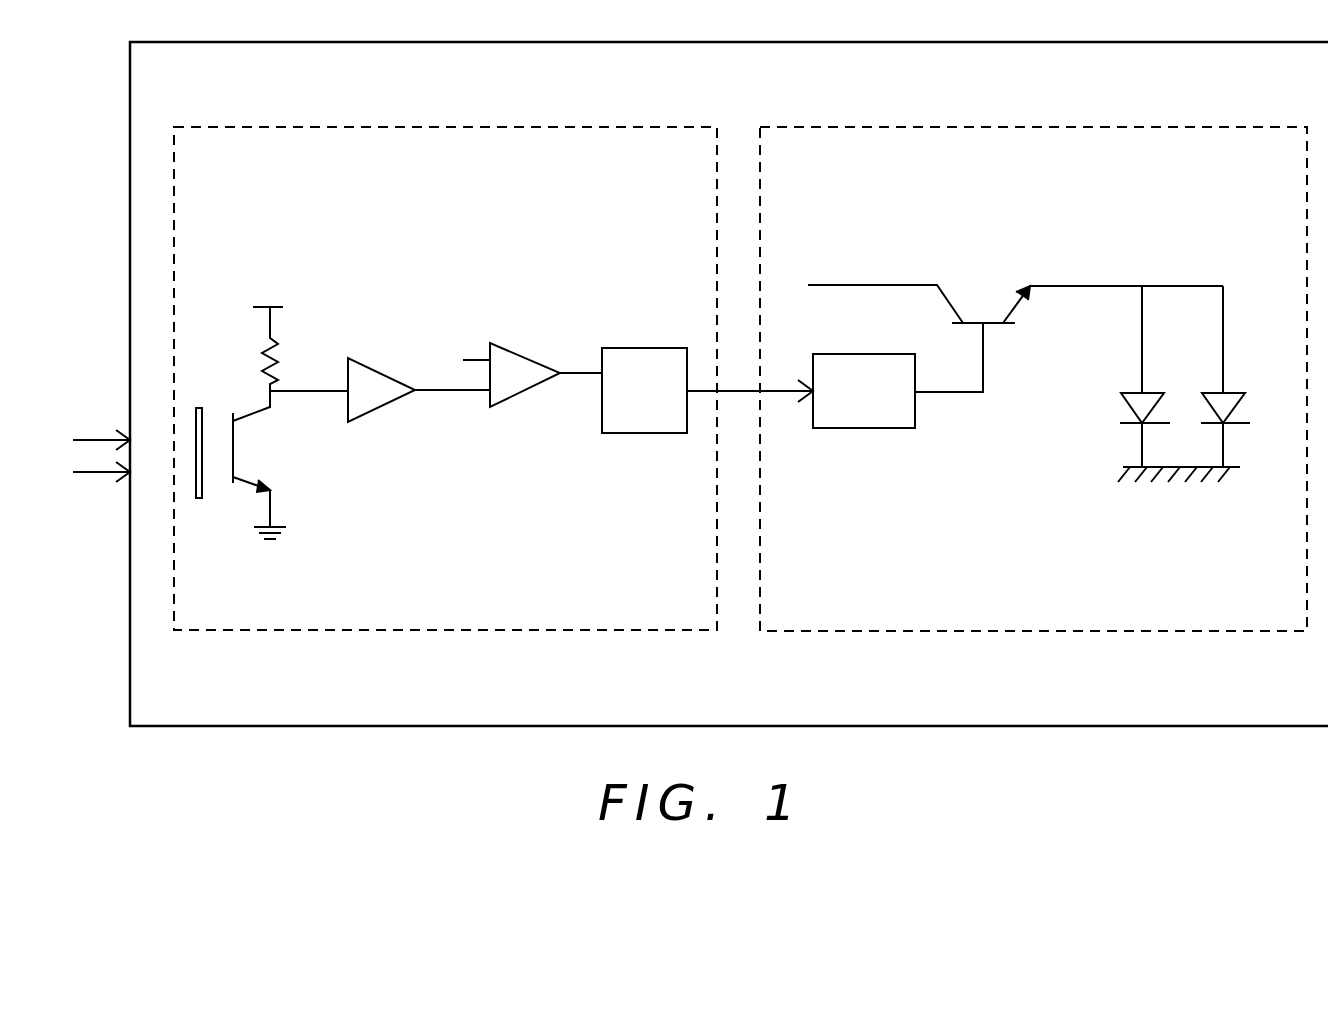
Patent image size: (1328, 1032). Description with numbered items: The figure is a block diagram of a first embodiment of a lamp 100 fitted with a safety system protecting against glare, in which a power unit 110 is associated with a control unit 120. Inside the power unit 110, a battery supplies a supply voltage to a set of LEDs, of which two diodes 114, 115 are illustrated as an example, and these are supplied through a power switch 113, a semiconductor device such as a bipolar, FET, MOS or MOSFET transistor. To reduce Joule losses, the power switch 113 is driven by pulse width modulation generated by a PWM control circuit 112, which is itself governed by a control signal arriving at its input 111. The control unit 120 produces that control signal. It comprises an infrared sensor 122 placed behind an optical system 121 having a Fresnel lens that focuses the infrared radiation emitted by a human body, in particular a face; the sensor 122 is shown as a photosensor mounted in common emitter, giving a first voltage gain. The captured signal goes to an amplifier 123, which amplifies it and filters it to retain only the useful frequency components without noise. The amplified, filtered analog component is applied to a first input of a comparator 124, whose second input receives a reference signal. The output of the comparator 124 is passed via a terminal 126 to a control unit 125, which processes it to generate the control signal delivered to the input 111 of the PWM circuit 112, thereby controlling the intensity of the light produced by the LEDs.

The lamp 100 is at (1318, 715).
The power unit 110 is at (960, 631).
The input 111 is at (740, 393).
The PWM control circuit 112 is at (890, 428).
The power switch 113 is at (997, 325).
The diode 114 is at (1130, 393).
The diode 115 is at (1237, 393).
The control unit 120 is at (377, 631).
The optical system 121 is at (201, 480).
The infrared sensor 122 is at (233, 413).
The amplifier 123 is at (388, 370).
The comparator 124 is at (533, 355).
The control unit 125 is at (667, 348).
The terminal 126 is at (577, 377).